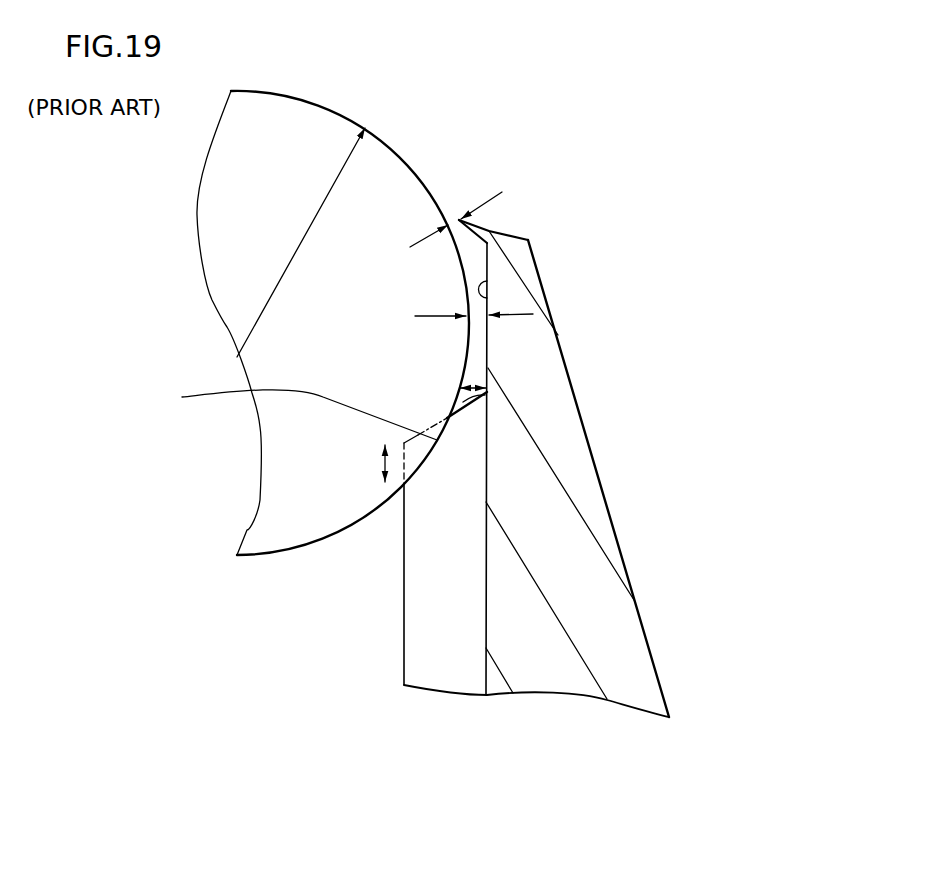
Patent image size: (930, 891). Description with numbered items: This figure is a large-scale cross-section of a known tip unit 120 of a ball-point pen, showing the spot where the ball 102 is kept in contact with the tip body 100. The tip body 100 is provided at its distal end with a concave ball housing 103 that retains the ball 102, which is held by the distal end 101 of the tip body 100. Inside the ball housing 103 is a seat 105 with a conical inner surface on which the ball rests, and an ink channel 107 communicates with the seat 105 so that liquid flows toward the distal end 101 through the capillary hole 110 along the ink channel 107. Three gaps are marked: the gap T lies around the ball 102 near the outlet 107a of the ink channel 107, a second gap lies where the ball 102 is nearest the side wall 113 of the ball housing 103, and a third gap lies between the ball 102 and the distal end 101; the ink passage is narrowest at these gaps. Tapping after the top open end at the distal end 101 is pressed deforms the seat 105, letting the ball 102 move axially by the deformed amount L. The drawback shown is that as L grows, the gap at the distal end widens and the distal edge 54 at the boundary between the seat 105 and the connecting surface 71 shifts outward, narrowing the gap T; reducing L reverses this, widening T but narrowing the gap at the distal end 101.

The tip unit 120 is at (556, 106).
The ball 102 is at (295, 122).
The distal end 101 is at (478, 221).
The ball housing 103 is at (478, 333).
The side wall 113 is at (482, 280).
The tip body 100 is at (595, 573).
The outlet 107a is at (490, 396).
The connecting surface 71 is at (472, 410).
The distal edge 54 is at (448, 418).
The ink channel 107 is at (445, 667).
The seat 105 is at (292, 414).
The capillary hole 110 is at (323, 632).